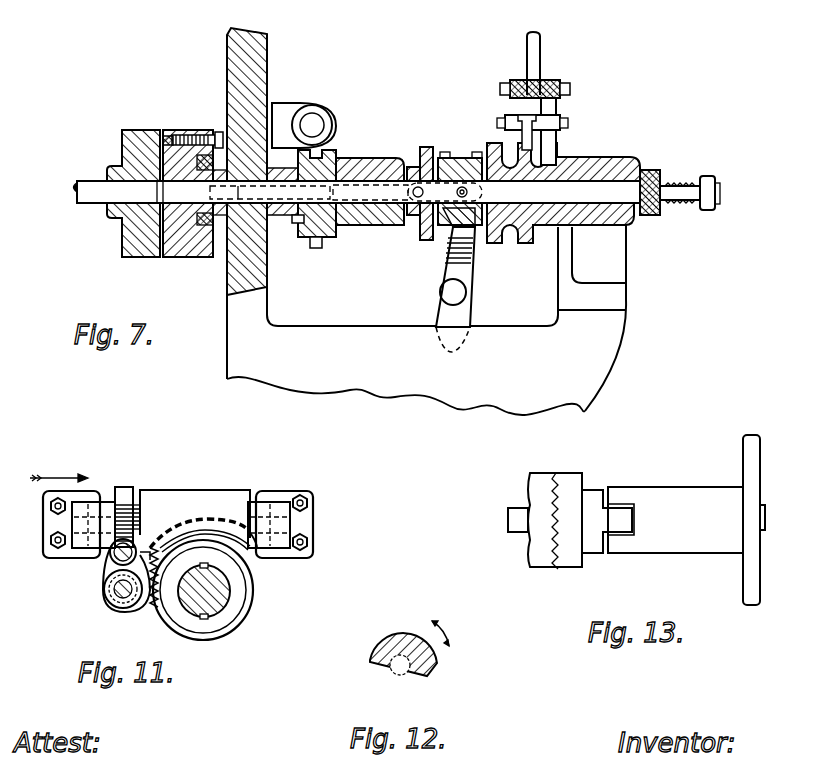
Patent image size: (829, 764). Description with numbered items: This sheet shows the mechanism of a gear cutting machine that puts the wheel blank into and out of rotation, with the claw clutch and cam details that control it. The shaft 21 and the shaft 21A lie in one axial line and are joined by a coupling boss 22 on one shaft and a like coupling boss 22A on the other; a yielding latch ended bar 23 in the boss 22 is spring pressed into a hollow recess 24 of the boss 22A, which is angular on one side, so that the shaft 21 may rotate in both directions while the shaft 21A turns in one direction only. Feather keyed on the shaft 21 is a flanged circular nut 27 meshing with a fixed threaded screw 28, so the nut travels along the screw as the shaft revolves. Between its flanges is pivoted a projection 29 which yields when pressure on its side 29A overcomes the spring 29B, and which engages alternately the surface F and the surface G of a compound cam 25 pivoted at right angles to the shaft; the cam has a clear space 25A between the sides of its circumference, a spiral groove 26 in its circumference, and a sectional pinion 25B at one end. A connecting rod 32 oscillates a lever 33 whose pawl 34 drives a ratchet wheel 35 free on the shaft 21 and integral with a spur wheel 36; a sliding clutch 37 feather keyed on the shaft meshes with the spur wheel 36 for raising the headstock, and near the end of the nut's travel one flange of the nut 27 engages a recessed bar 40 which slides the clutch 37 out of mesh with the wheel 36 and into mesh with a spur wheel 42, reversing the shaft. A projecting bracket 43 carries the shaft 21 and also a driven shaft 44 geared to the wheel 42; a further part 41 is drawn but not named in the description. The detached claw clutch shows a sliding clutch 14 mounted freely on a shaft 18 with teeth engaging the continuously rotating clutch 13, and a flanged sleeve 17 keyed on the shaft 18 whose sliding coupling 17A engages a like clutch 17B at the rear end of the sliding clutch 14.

In FIG. 13, the continuously rotating clutch 13 is at (542, 481).
In FIG. 13, the sliding clutch 14 is at (575, 483).
In FIG. 13, the flanged sleeve 17 is at (686, 508).
In FIG. 13, the sliding coupling 17A is at (620, 540).
In FIG. 13, the clutch 17B is at (605, 523).
In FIG. 13, the shaft 18 is at (505, 518).
In FIG. 7, the shaft 21 is at (397, 192).
In FIG. 11, the shaft 21 is at (212, 598).
In FIG. 7, the shaft 21A is at (96, 191).
In FIG. 7, the coupling boss 22 is at (191, 244).
In FIG. 7, the coupling boss 22A is at (140, 244).
In FIG. 7, the yielding latch ended bar 23 is at (169, 134).
In FIG. 7, the hollow recess 24 is at (161, 139).
In FIG. 11, the compound cam 25 is at (160, 505).
In FIG. 12, the compound cam 25 is at (388, 632).
In FIG. 12, the clear space 25A is at (400, 670).
In FIG. 11, the sectional pinion 25B is at (137, 487).
In FIG. 11, the spiral groove 26 is at (112, 558).
In FIG. 7, the circular nut 27 is at (323, 153).
In FIG. 11, the circular nut 27 is at (254, 598).
In FIG. 7, the fixed threaded screw 28 is at (295, 224).
In FIG. 7, the projection 29 is at (318, 249).
In FIG. 11, the projection 29 is at (153, 543).
In FIG. 11, the side of projection 29A is at (232, 550).
In FIG. 11, the spring 29B is at (152, 606).
In FIG. 7, the connecting rod 32 is at (540, 53).
In FIG. 7, the lever 33 is at (557, 101).
In FIG. 7, the pawl 34 is at (521, 118).
In FIG. 7, the ratchet wheel 35 is at (528, 243).
In FIG. 7, the spur wheel 36 is at (500, 146).
In FIG. 7, the sliding clutch 37 is at (468, 158).
In FIG. 7, the recessed bar 40 is at (223, 220).
In FIG. 7, the spacer ring 41 is at (412, 167).
In FIG. 7, the spur wheel 42 is at (427, 147).
In FIG. 7, the projecting bracket 43 is at (480, 285).
In FIG. 11, the shaft 44 is at (105, 600).
In FIG. 11, the surface of compound cam G is at (204, 519).
In FIG. 12, the surface of compound cam G is at (372, 661).
In FIG. 11, the surface of compound cam F is at (233, 527).
In FIG. 12, the surface of compound cam F is at (428, 676).